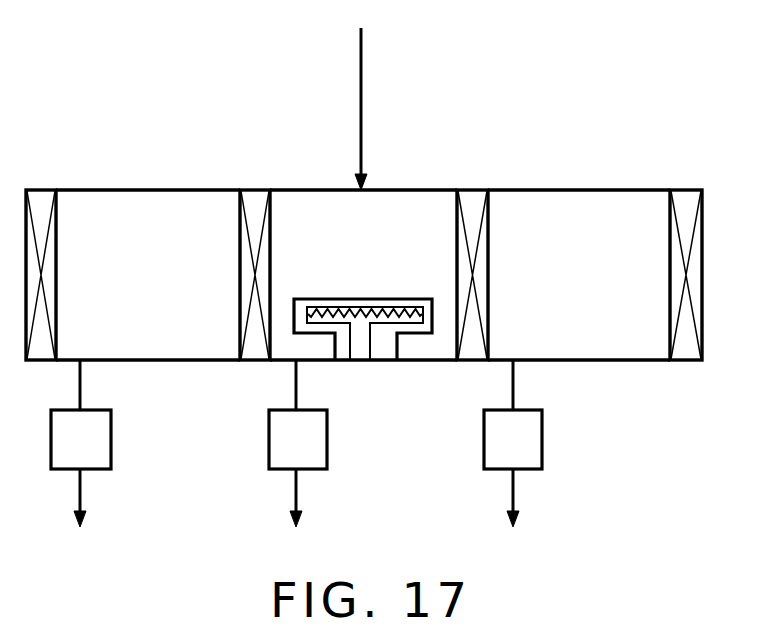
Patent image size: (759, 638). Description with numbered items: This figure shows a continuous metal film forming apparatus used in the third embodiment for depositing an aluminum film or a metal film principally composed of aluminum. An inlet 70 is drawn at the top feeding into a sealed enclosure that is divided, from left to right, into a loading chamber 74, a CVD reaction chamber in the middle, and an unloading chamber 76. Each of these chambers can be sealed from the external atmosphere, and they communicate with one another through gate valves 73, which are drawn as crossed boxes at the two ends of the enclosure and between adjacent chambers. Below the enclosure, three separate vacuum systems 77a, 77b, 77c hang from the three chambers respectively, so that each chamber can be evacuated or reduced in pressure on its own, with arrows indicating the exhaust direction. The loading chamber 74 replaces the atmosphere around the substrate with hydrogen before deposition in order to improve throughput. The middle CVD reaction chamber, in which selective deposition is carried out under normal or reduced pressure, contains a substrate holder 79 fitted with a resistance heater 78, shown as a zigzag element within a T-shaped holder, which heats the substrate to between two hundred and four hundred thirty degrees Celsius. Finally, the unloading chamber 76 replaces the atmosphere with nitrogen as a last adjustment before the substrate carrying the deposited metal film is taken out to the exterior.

The inlet flow 70 is at (362, 80).
The gate valve 73 is at (42, 189).
The loading chamber 74 is at (177, 362).
The unloading chamber 76 is at (613, 362).
The vacuum system 77a is at (111, 447).
The vacuum system 77b is at (327, 447).
The vacuum system 77c is at (542, 447).
The resistance heater 78 is at (382, 324).
The substrate holder 79 is at (352, 299).